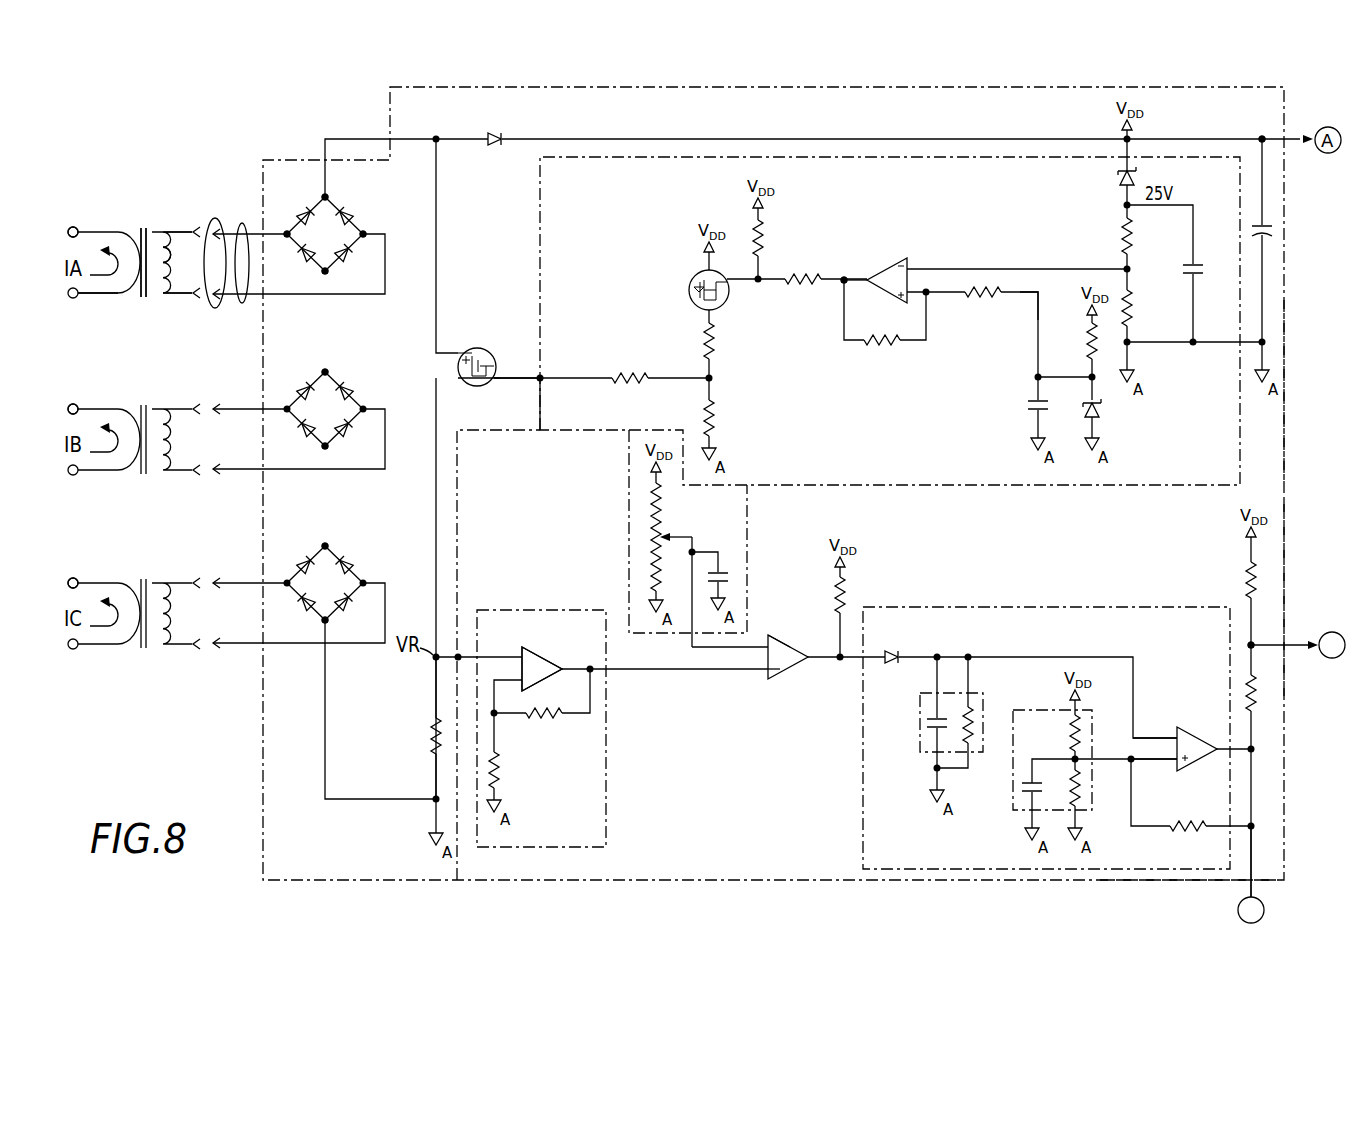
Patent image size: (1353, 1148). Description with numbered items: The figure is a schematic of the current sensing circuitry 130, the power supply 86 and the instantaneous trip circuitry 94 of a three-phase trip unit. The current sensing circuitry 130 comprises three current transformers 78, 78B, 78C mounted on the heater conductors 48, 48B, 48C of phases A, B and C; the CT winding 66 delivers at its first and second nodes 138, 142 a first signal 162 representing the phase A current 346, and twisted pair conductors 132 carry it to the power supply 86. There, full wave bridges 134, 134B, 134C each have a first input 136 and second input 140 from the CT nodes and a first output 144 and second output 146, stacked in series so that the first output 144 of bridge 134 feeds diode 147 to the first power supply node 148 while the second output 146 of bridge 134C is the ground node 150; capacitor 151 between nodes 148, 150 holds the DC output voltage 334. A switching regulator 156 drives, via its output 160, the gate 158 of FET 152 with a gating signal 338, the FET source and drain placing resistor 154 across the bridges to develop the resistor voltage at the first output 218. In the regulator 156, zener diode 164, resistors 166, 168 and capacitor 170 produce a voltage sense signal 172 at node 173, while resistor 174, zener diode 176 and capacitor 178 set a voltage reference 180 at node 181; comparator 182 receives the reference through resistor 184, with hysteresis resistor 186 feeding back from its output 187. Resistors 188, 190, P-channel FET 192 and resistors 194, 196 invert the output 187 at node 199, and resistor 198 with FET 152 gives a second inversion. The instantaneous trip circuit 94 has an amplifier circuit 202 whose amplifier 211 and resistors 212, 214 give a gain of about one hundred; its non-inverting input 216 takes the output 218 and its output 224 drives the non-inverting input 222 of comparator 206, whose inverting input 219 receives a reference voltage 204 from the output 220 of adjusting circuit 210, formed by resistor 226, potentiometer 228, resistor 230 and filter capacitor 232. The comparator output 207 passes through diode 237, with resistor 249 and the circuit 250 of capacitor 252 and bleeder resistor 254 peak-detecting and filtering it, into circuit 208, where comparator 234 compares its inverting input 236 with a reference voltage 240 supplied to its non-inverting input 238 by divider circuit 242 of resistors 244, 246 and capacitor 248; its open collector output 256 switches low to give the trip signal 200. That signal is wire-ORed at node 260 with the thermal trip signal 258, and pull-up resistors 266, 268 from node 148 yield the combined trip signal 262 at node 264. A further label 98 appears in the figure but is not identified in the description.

The heater conductor 48 is at (92, 230).
The heater conductor 48B is at (95, 406).
The heater conductor 48C is at (95, 580).
The current transformer (CT) 78 is at (133, 225).
The current transformer (CT) 78B is at (140, 398).
The current transformer (CT) 78C is at (140, 572).
The CT winding 66 is at (165, 263).
The phase A current 346 is at (95, 285).
The first node 138 is at (172, 228).
The second node 142 is at (178, 312).
The twisted pair conductors 132 is at (210, 225).
The first signal 162 is at (240, 304).
The current sensing circuitry 130 is at (132, 672).
The full wave bridge (FWB) 134 is at (355, 265).
The full wave bridge (FWB) 134B is at (355, 440).
The full wave bridge (FWB) 134C is at (355, 615).
The first input 136 is at (287, 228).
The second input 140 is at (367, 238).
The first output 144 is at (323, 546).
The second output 146 is at (322, 622).
The diode 147 is at (493, 148).
The FET transistor 152 is at (468, 347).
The FET gating signal 338 is at (524, 376).
The output 160 is at (542, 375).
The FET gate 158 is at (490, 382).
The resistor 198 is at (634, 358).
The node 199 is at (713, 378).
The resistor 194 is at (713, 340).
The resistor 196 is at (712, 415).
The P-channel FET 192 is at (692, 280).
The resistor 190 is at (762, 230).
The resistor 188 is at (790, 290).
The comparator output 187 is at (848, 266).
The comparator 182 is at (900, 260).
The power supply voltage sense signal 172 is at (945, 269).
The resistor 184 is at (985, 300).
The voltage reference 180 is at (1035, 305).
The hysteresis resistor 186 is at (872, 345).
The node 181 is at (1034, 376).
The capacitor 178 is at (1028, 415).
The resistor 174 is at (1086, 330).
The zener diode 176 is at (1098, 420).
The DC output voltage (VDD) 334 is at (1120, 137).
The first power supply node (VDD) 148 is at (1248, 550).
The zener diode 164 is at (1118, 178).
The resistor 166 is at (1120, 238).
The node 173 is at (1131, 268).
The resistor 168 is at (1133, 306).
The capacitor 170 is at (1196, 275).
The capacitor 151 is at (1268, 232).
The second power supply node 150 is at (432, 802).
The power supply 86 is at (1294, 392).
The switching regulator 156 is at (1125, 487).
The circuit for adjusting the reference voltage 210 is at (749, 520).
The resistor 226 is at (650, 496).
The potentiometer 228 is at (650, 537).
The resistor 230 is at (650, 584).
The output 220 is at (694, 550).
The filter capacitor 232 is at (724, 574).
The first output 218 is at (460, 698).
The non-inverting input 216 is at (525, 662).
The amplifier 211 is at (535, 655).
The output 224 is at (592, 672).
The resistor 212 is at (540, 718).
The resistor 214 is at (500, 775).
The amplifier circuit 202 is at (607, 822).
The reference voltage 204 is at (700, 648).
The comparator 206 is at (790, 672).
The output 207 is at (812, 644).
The inverting input 219 is at (772, 640).
The non-inverting comparator input 222 is at (767, 675).
The resistor 249 is at (845, 582).
The diode 237 is at (892, 648).
The circuit 208 is at (975, 607).
The bleeder resistor 254 is at (972, 705).
The capacitor 252 is at (925, 718).
The circuit 250 is at (927, 752).
The resistor 244 is at (1068, 738).
The resistor 246 is at (1080, 798).
The capacitor 248 is at (1024, 790).
The divider circuit 242 is at (1020, 812).
The reference voltage 240 is at (1112, 752).
The inverting input 236 is at (1175, 730).
The non-inverting comparator input 238 is at (1170, 765).
The open collector output 256 is at (1212, 740).
The comparator 234 is at (1200, 762).
The resistor 154 is at (430, 735).
The pull-up resistor 266 is at (1244, 584).
The node 264 is at (1256, 640).
The combined trip signal 262 is at (1292, 652).
The pull-up resistor 268 is at (1258, 700).
The node 260 is at (1256, 752).
The first trip signal 200 is at (1256, 760).
The trip signal 258 is at (1256, 842).
The instantaneous trip circuitry 94 is at (1295, 538).
The output circuit 98 is at (1228, 892).